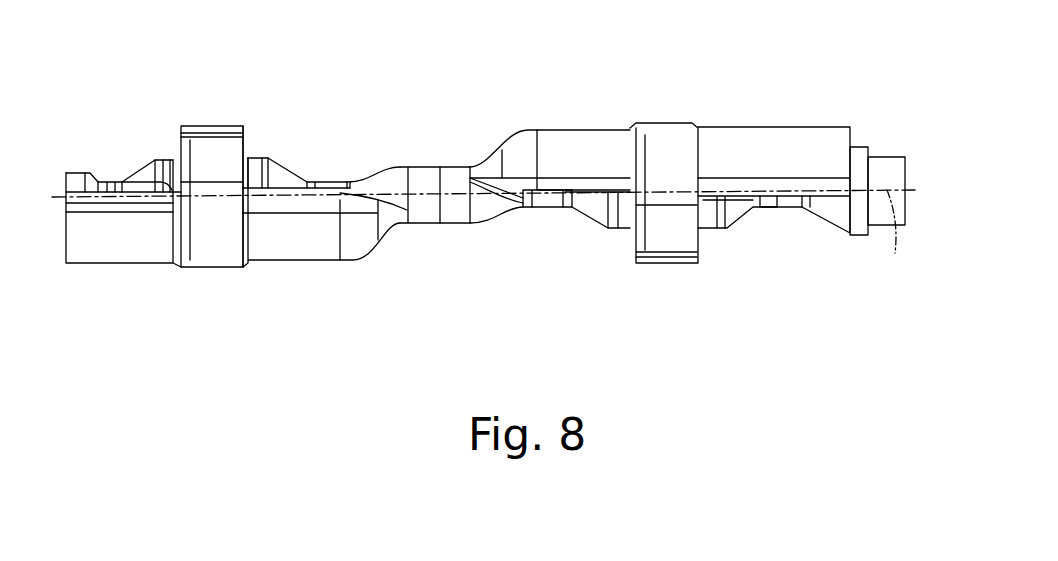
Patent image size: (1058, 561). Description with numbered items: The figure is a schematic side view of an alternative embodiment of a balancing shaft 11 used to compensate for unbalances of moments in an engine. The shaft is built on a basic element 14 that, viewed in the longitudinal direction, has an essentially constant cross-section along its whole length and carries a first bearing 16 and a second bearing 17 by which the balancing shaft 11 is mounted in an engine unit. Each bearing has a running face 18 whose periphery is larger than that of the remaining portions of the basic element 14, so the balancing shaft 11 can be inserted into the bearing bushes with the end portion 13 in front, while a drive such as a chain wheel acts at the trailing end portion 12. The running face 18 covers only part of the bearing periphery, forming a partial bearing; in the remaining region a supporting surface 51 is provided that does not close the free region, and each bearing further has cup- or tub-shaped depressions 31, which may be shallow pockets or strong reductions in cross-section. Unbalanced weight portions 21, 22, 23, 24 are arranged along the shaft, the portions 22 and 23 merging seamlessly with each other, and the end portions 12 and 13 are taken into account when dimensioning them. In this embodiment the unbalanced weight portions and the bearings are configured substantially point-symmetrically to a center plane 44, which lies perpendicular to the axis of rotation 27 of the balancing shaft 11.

The balancing shaft 11 is at (397, 100).
The trailing end portion 12 is at (895, 140).
The end portion 13 is at (83, 152).
The basic element 14 is at (517, 251).
The first bearing 16 is at (658, 105).
The second bearing 17 is at (212, 278).
The running face 18 is at (206, 240).
The unbalanced weight portion 21 is at (793, 115).
The unbalanced weight portion 22 is at (565, 110).
The unbalanced weight portion 23 is at (312, 275).
The unbalanced weight portion 24 is at (135, 275).
The axis of rotation 27 is at (896, 236).
The depression 31 is at (227, 160).
The center plane 44 is at (442, 186).
The supporting surface 51 is at (207, 120).